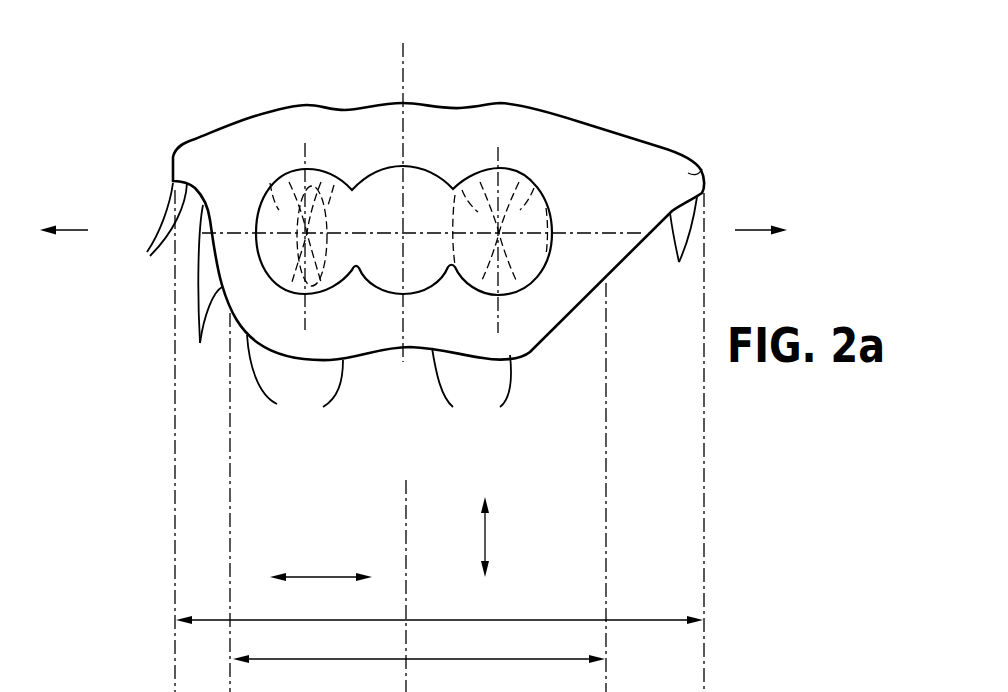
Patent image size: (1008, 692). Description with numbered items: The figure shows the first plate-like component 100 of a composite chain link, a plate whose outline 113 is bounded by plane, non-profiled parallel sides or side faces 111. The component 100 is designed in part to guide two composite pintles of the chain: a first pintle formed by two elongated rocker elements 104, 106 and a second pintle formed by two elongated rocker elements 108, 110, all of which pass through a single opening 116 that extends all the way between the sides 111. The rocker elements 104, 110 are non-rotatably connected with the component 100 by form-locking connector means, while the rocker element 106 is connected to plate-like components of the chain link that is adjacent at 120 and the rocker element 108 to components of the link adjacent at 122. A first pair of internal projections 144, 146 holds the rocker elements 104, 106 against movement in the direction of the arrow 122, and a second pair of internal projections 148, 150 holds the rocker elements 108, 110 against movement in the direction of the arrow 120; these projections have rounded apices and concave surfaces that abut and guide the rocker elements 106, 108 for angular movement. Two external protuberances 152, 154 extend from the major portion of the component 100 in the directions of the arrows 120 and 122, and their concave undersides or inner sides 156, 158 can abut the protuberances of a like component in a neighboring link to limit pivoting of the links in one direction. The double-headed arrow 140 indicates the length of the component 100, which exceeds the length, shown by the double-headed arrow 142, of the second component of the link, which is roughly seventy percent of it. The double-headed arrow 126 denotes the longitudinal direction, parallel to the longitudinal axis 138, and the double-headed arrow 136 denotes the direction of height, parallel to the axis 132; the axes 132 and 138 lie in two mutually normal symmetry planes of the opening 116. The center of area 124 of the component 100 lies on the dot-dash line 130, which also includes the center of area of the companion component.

The first plate-like component 100 is at (419, 346).
The rocker element 104 is at (266, 206).
The rocker element 106 is at (321, 172).
The rocker element 108 is at (500, 225).
The rocker element 110 is at (536, 187).
The side faces 111 is at (584, 297).
The outline 113 is at (398, 231).
The opening 116 is at (410, 190).
The arrow 120 is at (66, 232).
The arrow 122 is at (753, 230).
The center of area 124 is at (417, 311).
The double-headed arrow 126 is at (315, 575).
The dot-dash line 130 is at (407, 493).
The axis 132 is at (407, 187).
The double-headed arrow 136 is at (485, 525).
The longitudinal axis 138 is at (573, 233).
The double-headed arrow 140 is at (483, 618).
The double-headed arrow 142 is at (460, 657).
The internal projection 144 is at (357, 270).
The internal projection 146 is at (352, 190).
The internal projection 148 is at (453, 189).
The internal projection 150 is at (448, 270).
The external protuberance 152 is at (178, 153).
The external protuberance 154 is at (702, 170).
The concave underside 156 is at (149, 253).
The concave underside 158 is at (676, 246).